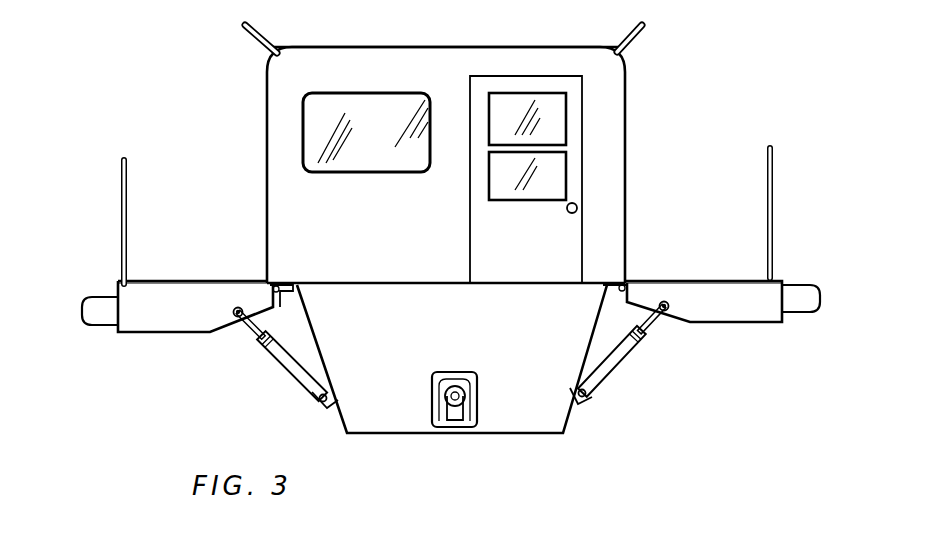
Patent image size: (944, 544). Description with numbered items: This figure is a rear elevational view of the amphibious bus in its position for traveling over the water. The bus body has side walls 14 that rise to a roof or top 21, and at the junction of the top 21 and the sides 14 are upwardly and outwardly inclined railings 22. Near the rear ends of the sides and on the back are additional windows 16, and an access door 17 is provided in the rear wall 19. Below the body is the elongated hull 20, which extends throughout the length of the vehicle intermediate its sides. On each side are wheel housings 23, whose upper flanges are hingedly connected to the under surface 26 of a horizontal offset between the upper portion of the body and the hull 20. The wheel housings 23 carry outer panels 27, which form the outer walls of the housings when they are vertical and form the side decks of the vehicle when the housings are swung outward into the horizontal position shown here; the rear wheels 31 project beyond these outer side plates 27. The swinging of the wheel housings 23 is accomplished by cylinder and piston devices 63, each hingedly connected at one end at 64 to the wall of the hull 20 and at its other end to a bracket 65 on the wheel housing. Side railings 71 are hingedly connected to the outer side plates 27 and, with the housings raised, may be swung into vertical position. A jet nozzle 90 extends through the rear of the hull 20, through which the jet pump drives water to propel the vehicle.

The side walls 14 is at (267, 127).
The windows 16 is at (348, 160).
The access door 17 is at (573, 118).
The rear wall 19 is at (607, 164).
The hull 20 is at (438, 346).
The roof or top 21 is at (403, 48).
The railings 22 is at (263, 36).
The wheel housings 23 is at (197, 278).
The under surface 26 is at (283, 283).
The outer panels 27 is at (450, 285).
The rear wheels 31 is at (92, 310).
The cylinder and piston devices 63 is at (287, 368).
The hinged connection 64 is at (318, 405).
The bracket 65 is at (242, 325).
The side railings 71 is at (122, 182).
The jet nozzle 90 is at (470, 400).